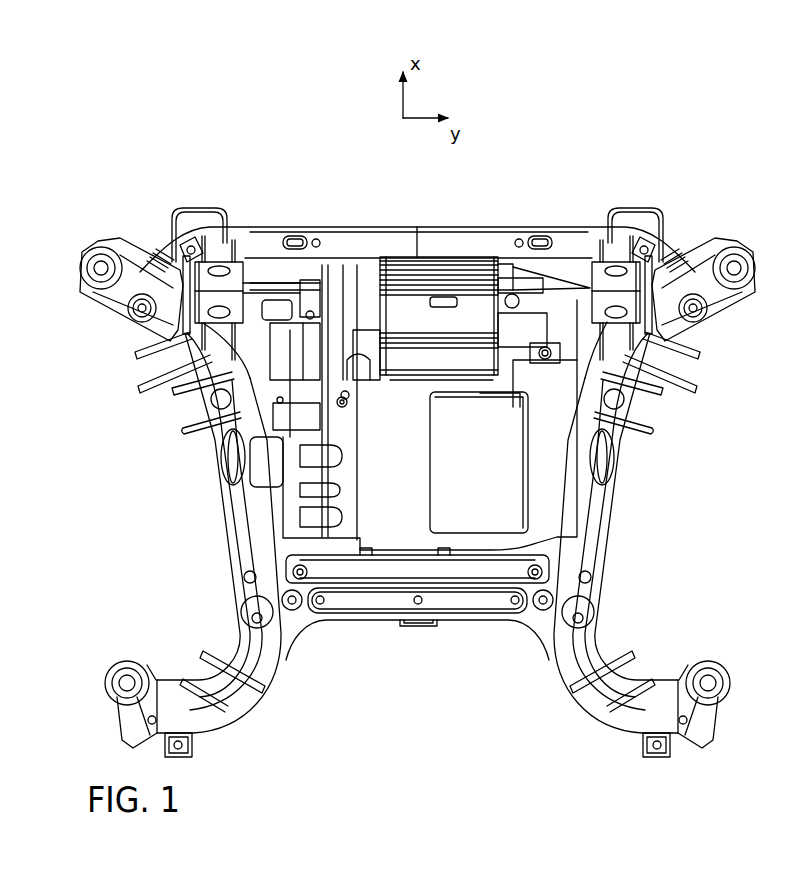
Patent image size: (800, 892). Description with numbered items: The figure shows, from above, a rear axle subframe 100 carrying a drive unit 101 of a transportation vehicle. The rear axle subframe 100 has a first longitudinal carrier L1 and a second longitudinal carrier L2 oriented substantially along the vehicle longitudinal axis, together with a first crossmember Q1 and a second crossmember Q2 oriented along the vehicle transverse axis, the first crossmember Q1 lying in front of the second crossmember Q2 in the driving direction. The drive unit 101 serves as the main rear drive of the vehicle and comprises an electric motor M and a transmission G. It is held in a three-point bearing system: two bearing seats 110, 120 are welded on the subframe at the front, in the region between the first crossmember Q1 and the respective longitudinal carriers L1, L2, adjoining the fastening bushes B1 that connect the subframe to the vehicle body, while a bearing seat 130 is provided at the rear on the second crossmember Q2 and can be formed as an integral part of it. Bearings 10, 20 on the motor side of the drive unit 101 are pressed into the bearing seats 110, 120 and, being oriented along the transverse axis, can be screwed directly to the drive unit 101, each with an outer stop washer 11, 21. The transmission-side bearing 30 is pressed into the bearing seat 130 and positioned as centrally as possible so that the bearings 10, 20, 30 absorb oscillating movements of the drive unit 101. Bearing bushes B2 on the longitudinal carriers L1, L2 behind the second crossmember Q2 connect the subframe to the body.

The rear axle subframe 100 is at (622, 146).
The bearing seat 110 is at (202, 278).
The bearing 10 is at (247, 257).
The electric motor M is at (302, 271).
The drive unit 101 is at (420, 317).
The first crossmember Q1 is at (492, 240).
The bearing 20 is at (582, 258).
The bearing seat 120 is at (628, 277).
The fastening bushes B1 is at (104, 266).
The outer stop washer 11 is at (186, 311).
The outer stop washer 21 is at (650, 315).
The first longitudinal carrier L1 is at (235, 510).
The second longitudinal carrier L2 is at (617, 458).
The transmission G is at (514, 519).
The bearing 30 is at (375, 624).
The bearing seat 130 is at (408, 624).
The second crossmember Q2 is at (497, 620).
The bearing bushes B2 is at (127, 683).